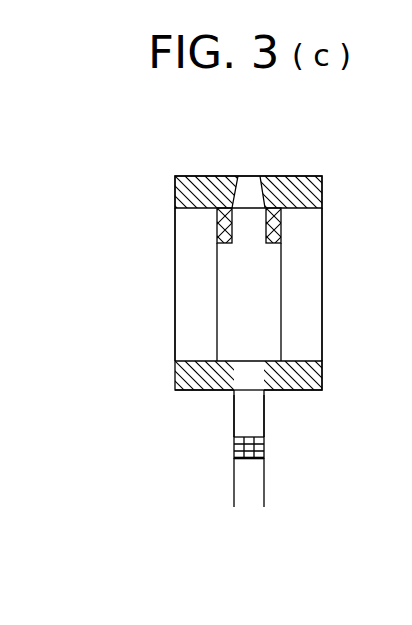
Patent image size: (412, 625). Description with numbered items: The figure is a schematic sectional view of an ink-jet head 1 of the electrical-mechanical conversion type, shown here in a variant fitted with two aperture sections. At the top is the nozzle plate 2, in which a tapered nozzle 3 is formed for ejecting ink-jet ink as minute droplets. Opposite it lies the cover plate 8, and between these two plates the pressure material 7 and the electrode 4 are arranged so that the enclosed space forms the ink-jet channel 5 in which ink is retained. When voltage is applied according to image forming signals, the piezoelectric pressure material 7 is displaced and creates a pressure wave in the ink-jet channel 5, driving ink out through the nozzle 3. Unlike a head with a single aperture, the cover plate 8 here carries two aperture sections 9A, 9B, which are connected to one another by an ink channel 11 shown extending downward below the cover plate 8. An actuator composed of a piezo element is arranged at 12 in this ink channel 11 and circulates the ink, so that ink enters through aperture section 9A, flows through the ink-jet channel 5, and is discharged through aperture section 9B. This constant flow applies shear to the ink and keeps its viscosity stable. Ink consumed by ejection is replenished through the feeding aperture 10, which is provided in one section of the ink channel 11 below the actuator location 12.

The ink-jet head 1 is at (273, 155).
The nozzle plate 2 is at (312, 194).
The nozzle 3 is at (250, 190).
The electrode 4 is at (282, 229).
The ink-jet channel 5 is at (190, 290).
The pressure material 7 is at (305, 305).
The cover plate 8 is at (310, 378).
The aperture section 9A is at (242, 401).
The aperture section 9B is at (180, 440).
The feeding aperture 10 is at (255, 485).
The ink channel 11 is at (257, 413).
The actuator 12 is at (264, 448).